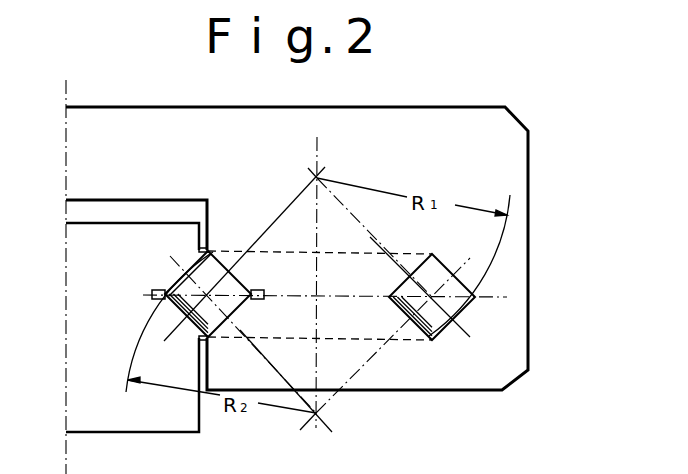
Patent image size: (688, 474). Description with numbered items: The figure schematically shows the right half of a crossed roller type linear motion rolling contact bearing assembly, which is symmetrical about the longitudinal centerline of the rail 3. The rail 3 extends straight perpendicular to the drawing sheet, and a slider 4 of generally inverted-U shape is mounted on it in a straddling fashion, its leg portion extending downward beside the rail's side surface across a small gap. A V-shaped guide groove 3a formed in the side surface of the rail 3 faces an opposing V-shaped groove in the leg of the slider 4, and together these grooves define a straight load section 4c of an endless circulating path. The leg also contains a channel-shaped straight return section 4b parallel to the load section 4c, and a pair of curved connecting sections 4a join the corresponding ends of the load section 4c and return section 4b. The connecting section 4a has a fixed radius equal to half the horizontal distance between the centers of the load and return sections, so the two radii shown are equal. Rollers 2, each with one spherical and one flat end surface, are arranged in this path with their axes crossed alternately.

The roller 2 is at (216, 272).
The rail 3 is at (123, 420).
The V-shaped guide groove 3a is at (173, 278).
The slider 4 is at (510, 159).
The curved connecting section 4a is at (363, 342).
The straight return section 4b is at (458, 289).
The straight load section 4c is at (156, 322).